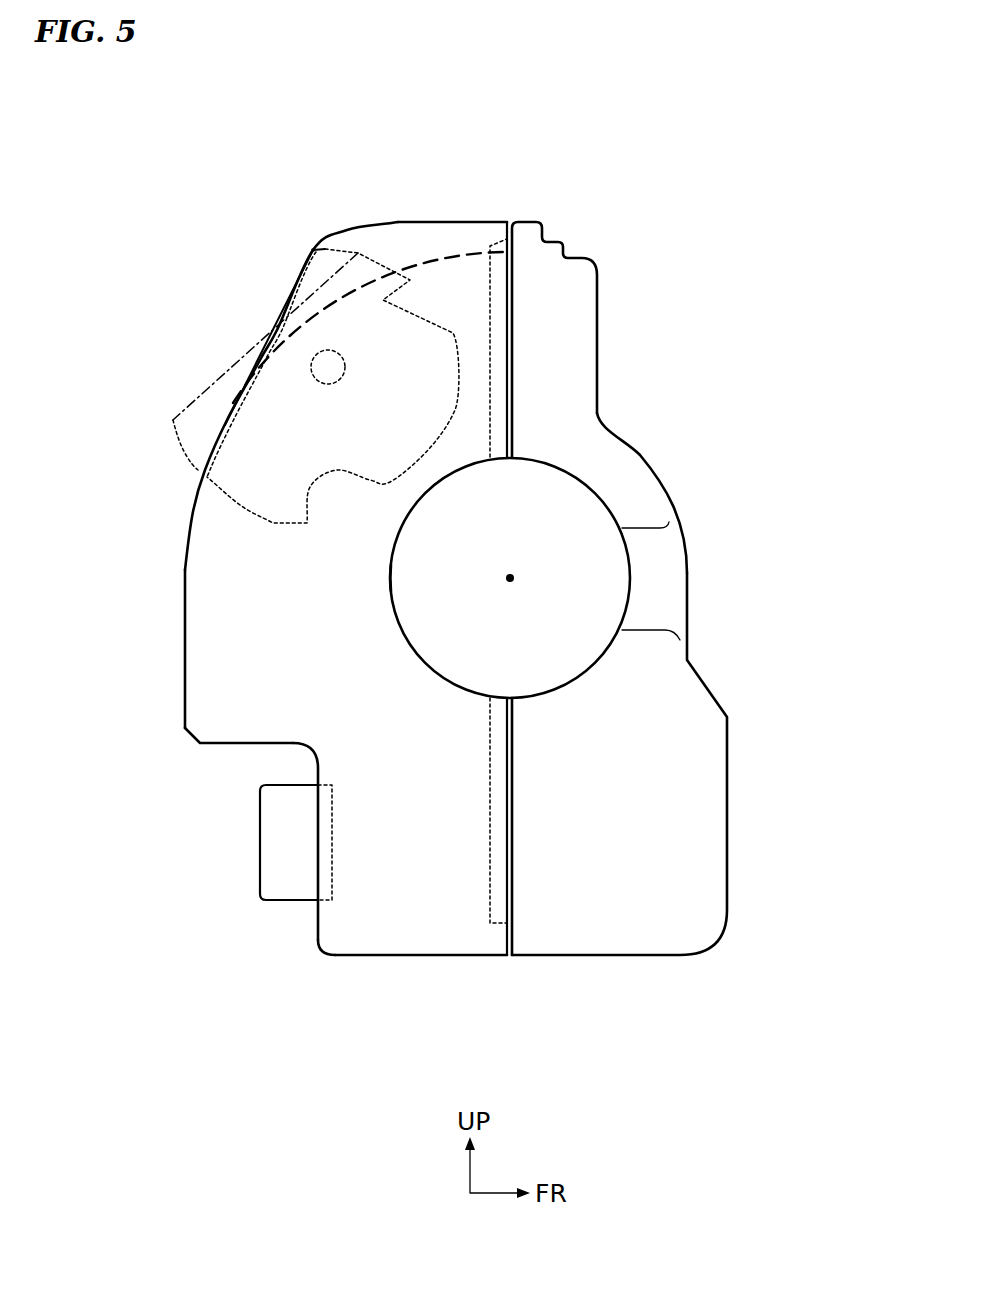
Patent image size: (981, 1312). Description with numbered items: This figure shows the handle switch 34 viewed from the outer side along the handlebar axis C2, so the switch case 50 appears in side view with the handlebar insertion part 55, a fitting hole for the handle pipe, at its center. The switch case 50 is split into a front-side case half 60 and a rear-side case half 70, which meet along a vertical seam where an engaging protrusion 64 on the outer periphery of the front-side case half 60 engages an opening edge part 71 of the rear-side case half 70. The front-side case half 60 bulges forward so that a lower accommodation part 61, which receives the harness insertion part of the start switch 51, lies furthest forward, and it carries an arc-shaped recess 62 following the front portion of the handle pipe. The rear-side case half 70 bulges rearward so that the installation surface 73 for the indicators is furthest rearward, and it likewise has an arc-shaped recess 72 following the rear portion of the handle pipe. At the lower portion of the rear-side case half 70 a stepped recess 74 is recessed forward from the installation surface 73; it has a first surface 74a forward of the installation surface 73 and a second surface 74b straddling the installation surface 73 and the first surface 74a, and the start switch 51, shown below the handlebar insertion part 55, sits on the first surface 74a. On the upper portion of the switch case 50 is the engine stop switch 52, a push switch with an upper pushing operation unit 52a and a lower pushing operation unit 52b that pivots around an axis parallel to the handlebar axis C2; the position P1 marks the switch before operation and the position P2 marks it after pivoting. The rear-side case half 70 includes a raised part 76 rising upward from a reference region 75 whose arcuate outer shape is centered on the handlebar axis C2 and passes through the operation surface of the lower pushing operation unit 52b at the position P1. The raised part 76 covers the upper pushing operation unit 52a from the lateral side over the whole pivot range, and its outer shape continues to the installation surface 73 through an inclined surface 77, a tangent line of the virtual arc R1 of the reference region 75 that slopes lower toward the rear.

The handle switch 34 is at (172, 173).
The switch case 50 is at (610, 343).
The start switch 51 is at (268, 855).
The engine stop switch 52 is at (212, 414).
The upper pushing operation unit 52a is at (302, 272).
The lower pushing operation unit 52b is at (215, 438).
The handlebar insertion part 55 is at (645, 562).
The front-side case half 60 is at (650, 447).
The lower accommodation part 61 is at (710, 893).
The arc-shaped recess 62 is at (610, 530).
The engaging protrusion 64 is at (497, 898).
The rear-side case half 70 is at (172, 692).
The opening edge part 71 is at (497, 958).
The arc-shaped recess 72 is at (388, 583).
The installation surface 73 is at (184, 658).
The recess 74 is at (218, 782).
The first surface 74a is at (318, 915).
The second surface 74b is at (215, 743).
The reference region 75 is at (462, 283).
The raised part 76 is at (398, 220).
The inclined surface 77 is at (245, 383).
The handlebar axis C2 is at (515, 580).
The position before pivoting P1 is at (311, 250).
The position after pivoting P2 is at (348, 258).
The virtual arc R1 is at (425, 262).